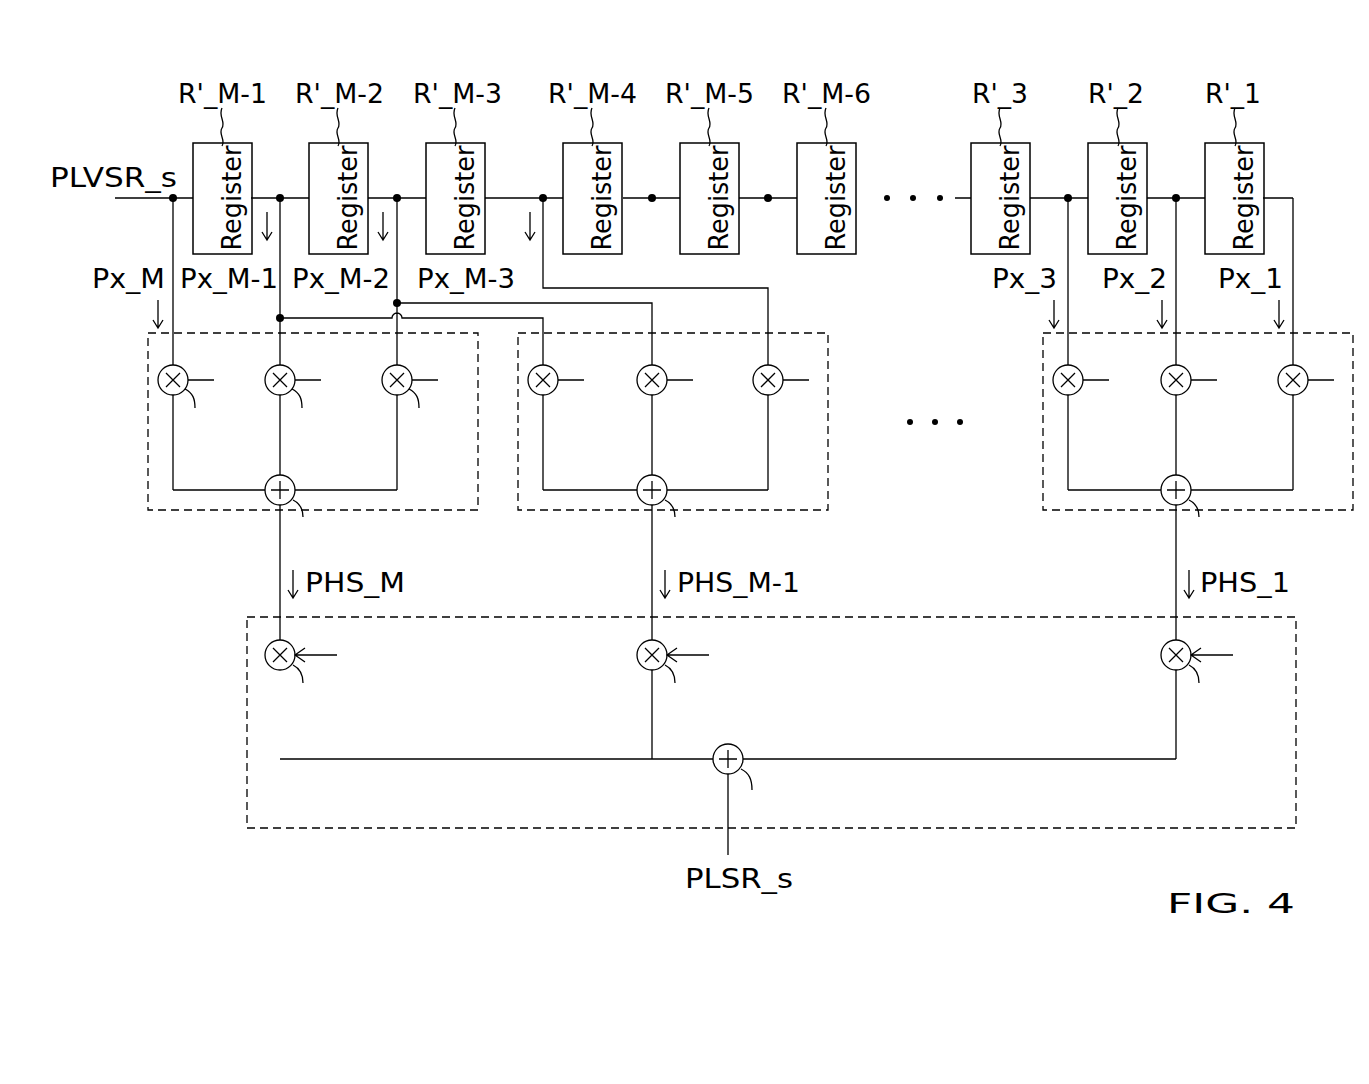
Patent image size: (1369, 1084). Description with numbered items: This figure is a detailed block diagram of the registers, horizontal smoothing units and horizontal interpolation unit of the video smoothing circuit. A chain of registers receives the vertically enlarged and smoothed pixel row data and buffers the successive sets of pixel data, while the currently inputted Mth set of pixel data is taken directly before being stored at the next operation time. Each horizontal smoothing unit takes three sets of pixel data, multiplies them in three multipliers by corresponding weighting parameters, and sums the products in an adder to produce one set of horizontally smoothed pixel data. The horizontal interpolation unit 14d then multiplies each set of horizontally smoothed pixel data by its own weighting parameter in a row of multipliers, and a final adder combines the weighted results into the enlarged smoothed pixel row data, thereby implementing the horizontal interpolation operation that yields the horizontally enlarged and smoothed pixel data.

The horizontal interpolation unit 14d is at (247, 718).